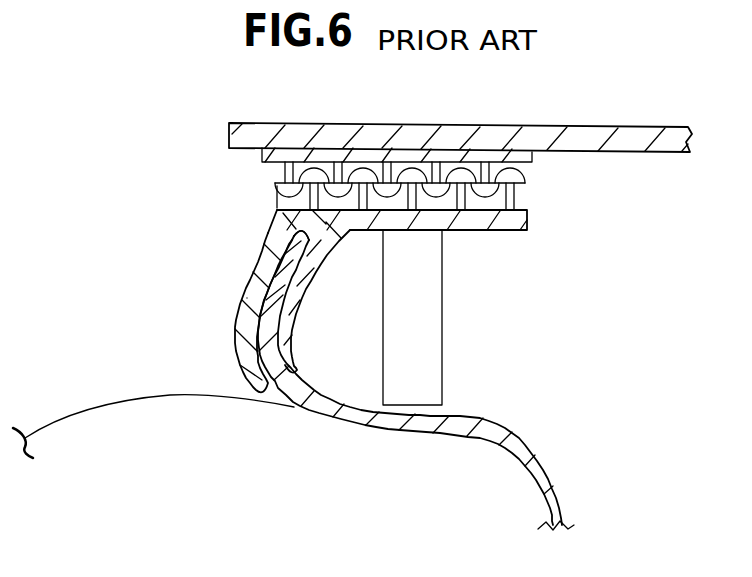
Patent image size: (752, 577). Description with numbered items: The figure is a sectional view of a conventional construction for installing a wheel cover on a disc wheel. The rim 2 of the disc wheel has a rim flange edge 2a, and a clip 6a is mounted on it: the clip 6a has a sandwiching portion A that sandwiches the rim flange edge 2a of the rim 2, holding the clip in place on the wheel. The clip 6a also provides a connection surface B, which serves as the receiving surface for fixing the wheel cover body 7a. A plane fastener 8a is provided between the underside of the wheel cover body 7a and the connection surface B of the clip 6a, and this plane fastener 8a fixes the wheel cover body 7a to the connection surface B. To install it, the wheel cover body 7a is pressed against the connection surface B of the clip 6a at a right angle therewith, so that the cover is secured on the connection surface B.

The rim 2 is at (517, 435).
The rim flange edge 2a is at (270, 283).
The clip 6a is at (267, 240).
The wheel cover body 7a is at (582, 143).
The plane fastener 8a is at (275, 184).
The sandwiching portion A is at (280, 332).
The connection surface B is at (523, 207).